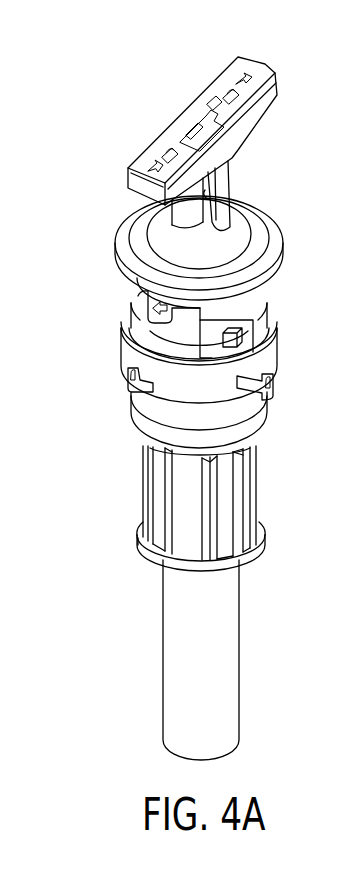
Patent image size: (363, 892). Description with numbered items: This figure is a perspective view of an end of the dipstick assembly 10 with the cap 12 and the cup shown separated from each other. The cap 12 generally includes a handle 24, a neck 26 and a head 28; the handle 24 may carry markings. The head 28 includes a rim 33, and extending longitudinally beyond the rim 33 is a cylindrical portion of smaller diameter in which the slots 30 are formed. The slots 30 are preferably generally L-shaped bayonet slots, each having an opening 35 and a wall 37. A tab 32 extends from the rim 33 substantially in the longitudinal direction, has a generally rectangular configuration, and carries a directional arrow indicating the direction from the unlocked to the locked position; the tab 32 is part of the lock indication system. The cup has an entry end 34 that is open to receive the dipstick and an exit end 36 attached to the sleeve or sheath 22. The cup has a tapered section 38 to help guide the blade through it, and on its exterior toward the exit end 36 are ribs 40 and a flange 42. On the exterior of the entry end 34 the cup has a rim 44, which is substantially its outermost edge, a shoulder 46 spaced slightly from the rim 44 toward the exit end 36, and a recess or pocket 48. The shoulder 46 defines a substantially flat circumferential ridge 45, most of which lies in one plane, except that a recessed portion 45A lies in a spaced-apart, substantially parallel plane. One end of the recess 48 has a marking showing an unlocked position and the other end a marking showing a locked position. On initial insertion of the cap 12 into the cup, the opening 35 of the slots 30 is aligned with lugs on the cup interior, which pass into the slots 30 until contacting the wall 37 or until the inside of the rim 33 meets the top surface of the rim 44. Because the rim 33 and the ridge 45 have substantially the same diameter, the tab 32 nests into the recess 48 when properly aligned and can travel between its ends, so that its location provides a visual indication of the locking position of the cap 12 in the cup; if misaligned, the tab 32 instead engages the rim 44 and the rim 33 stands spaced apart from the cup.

The dipstick assembly 10 is at (107, 88).
The cap 12 is at (88, 164).
The sleeve or sheath 22 is at (228, 712).
The handle 24 is at (276, 76).
The neck 26 is at (230, 186).
The head 28 is at (286, 270).
The slots 30 is at (236, 322).
The tab 32 is at (143, 295).
The rim 33 is at (125, 250).
The entry end 34 is at (300, 353).
The opening 35 is at (218, 333).
The exit end 36 is at (298, 547).
The wall 37 is at (218, 333).
The tapered section 38 is at (238, 453).
The ribs 40 is at (148, 500).
The flange 42 is at (247, 557).
The rim 44 is at (143, 345).
The ridge 45 is at (270, 357).
The recessed portion 45A is at (145, 540).
The shoulder 46 is at (130, 372).
The recess or pocket 48 is at (179, 387).